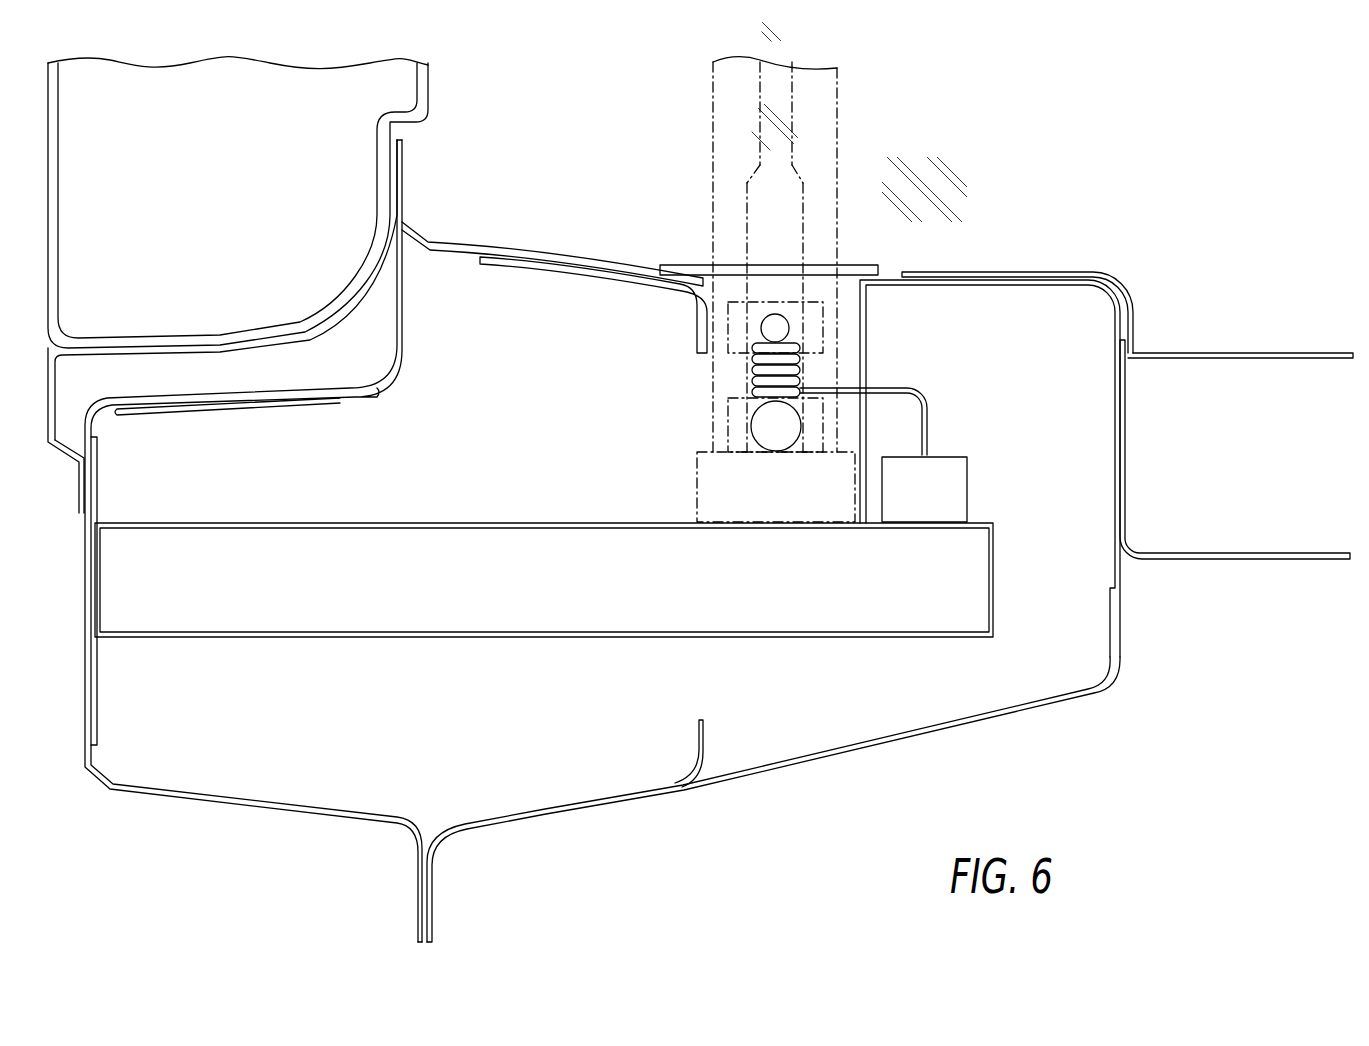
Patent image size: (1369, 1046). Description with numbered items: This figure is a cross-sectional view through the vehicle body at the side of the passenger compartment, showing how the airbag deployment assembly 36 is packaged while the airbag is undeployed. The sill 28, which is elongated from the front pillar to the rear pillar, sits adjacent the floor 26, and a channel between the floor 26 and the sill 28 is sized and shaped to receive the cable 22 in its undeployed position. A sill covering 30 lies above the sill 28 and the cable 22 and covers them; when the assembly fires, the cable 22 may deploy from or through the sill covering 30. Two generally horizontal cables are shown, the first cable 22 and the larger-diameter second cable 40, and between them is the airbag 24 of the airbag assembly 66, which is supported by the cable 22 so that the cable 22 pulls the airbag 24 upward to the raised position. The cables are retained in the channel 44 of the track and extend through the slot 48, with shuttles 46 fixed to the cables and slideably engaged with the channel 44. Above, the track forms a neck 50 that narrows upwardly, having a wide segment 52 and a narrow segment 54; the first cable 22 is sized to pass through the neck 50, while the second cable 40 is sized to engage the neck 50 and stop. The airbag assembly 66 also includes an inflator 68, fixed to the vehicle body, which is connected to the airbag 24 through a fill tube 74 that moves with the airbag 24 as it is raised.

The cable 22 is at (781, 316).
The airbag 24 is at (779, 362).
The floor 26 is at (1232, 352).
The sill 28 is at (1050, 212).
The sill covering 30 is at (676, 263).
The airbag deployment assembly 36 is at (845, 88).
The second cable 40 is at (792, 447).
The channel 44 is at (838, 160).
The shuttle 46 is at (713, 321).
The slot 48 is at (797, 257).
The neck 50 is at (755, 170).
The wide segment 52 is at (745, 205).
The narrow segment 54 is at (757, 112).
The airbag assembly 66 is at (746, 372).
The inflator 68 is at (970, 472).
The fill tube 74 is at (930, 418).